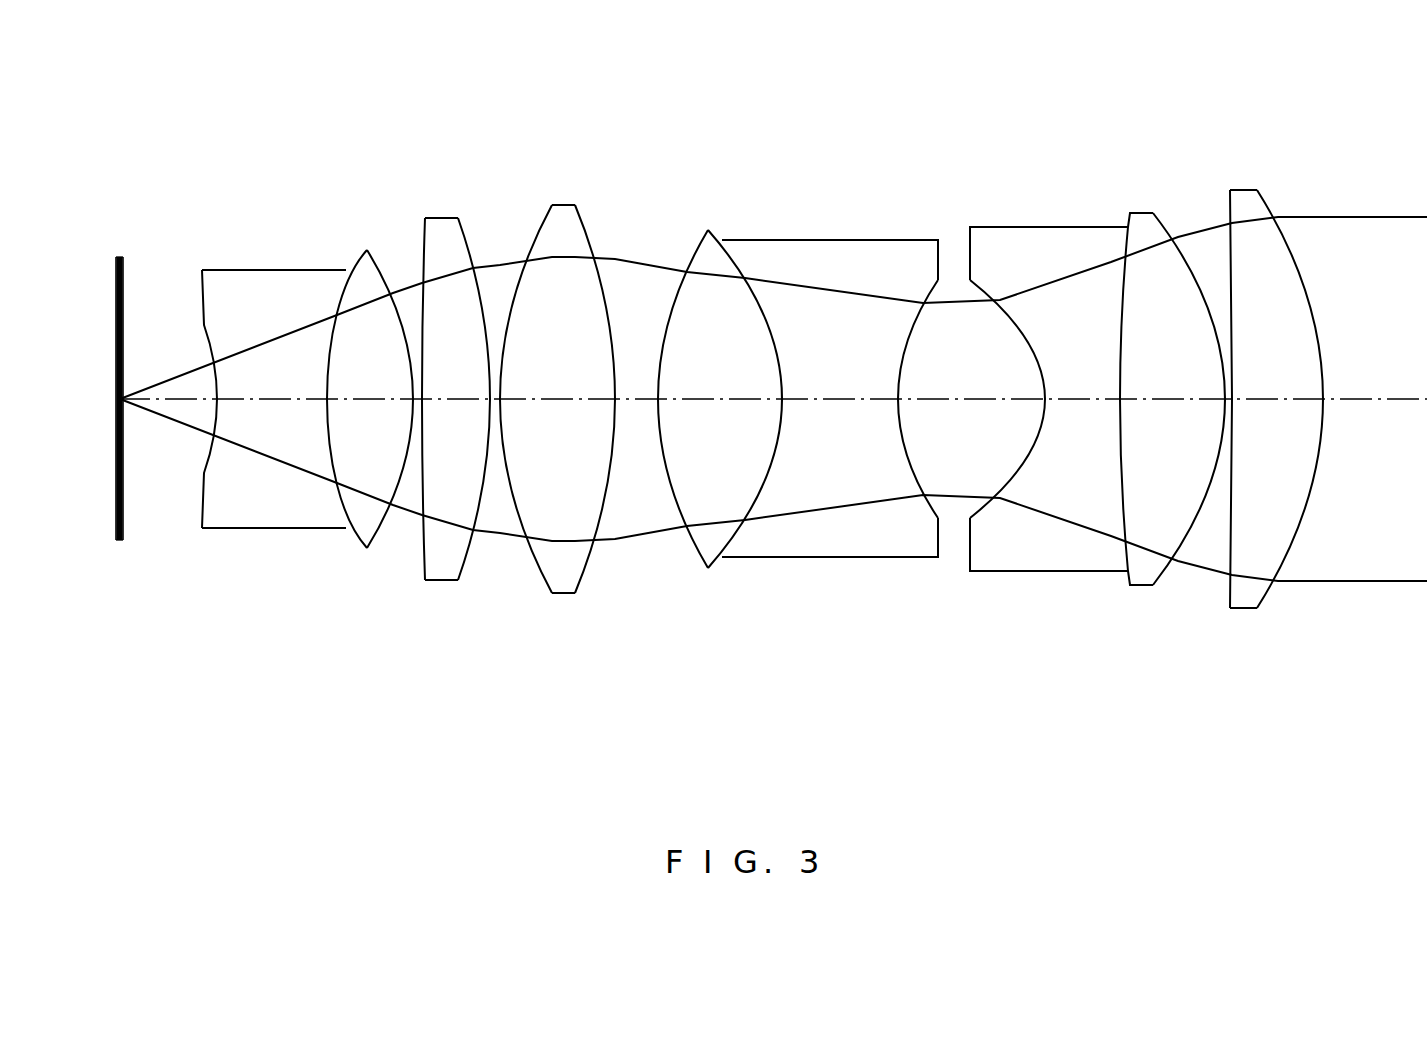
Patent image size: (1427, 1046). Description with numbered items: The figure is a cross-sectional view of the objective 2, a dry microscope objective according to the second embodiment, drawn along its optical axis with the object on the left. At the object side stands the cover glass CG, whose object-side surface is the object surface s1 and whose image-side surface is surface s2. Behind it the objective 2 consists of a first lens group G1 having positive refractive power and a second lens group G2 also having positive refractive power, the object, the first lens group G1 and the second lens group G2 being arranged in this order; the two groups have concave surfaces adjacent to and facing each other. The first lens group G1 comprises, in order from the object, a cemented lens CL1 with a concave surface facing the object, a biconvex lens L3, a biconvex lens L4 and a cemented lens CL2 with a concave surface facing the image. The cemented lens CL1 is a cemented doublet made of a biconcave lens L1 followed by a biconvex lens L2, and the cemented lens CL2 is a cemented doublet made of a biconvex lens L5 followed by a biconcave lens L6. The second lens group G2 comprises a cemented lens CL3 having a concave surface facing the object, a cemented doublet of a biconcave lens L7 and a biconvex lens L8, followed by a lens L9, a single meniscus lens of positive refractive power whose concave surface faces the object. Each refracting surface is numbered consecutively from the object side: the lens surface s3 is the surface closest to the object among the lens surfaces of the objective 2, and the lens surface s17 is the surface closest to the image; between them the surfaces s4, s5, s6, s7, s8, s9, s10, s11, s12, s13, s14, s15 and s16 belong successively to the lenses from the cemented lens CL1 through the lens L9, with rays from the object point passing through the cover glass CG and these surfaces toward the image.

The objective 2 is at (1391, 81).
The cover glass CG is at (127, 416).
The object surface s1 is at (118, 262).
The image-side surface of cover glass s2 is at (122, 265).
The object-side lens surface s3 is at (212, 353).
The lens surface s4 is at (337, 317).
The lens surface s5 is at (392, 297).
The lens surface s6 is at (422, 262).
The lens surface s7 is at (474, 258).
The lens surface s8 is at (532, 249).
The lens surface s9 is at (605, 245).
The lens surface s10 is at (690, 252).
The lens surface s11 is at (763, 303).
The lens surface s12 is at (913, 327).
The lens surface s13 is at (1013, 323).
The lens surface s14 is at (1120, 313).
The lens surface s15 is at (1203, 295).
The lens surface s16 is at (1233, 295).
The image-side lens surface s17 is at (1302, 270).
The lens L1 is at (272, 413).
The lens L2 is at (349, 414).
The lens L3 is at (443, 409).
The lens L4 is at (560, 407).
The lens L5 is at (720, 406).
The lens L6 is at (830, 406).
The lens L7 is at (1046, 401).
The lens L8 is at (1176, 400).
The lens L9 is at (1262, 400).
The cemented lens CL1 is at (305, 444).
The cemented lens CL2 is at (798, 437).
The cemented lens CL3 is at (1094, 431).
The first lens group G1 is at (561, 471).
The second lens group G2 is at (1146, 464).